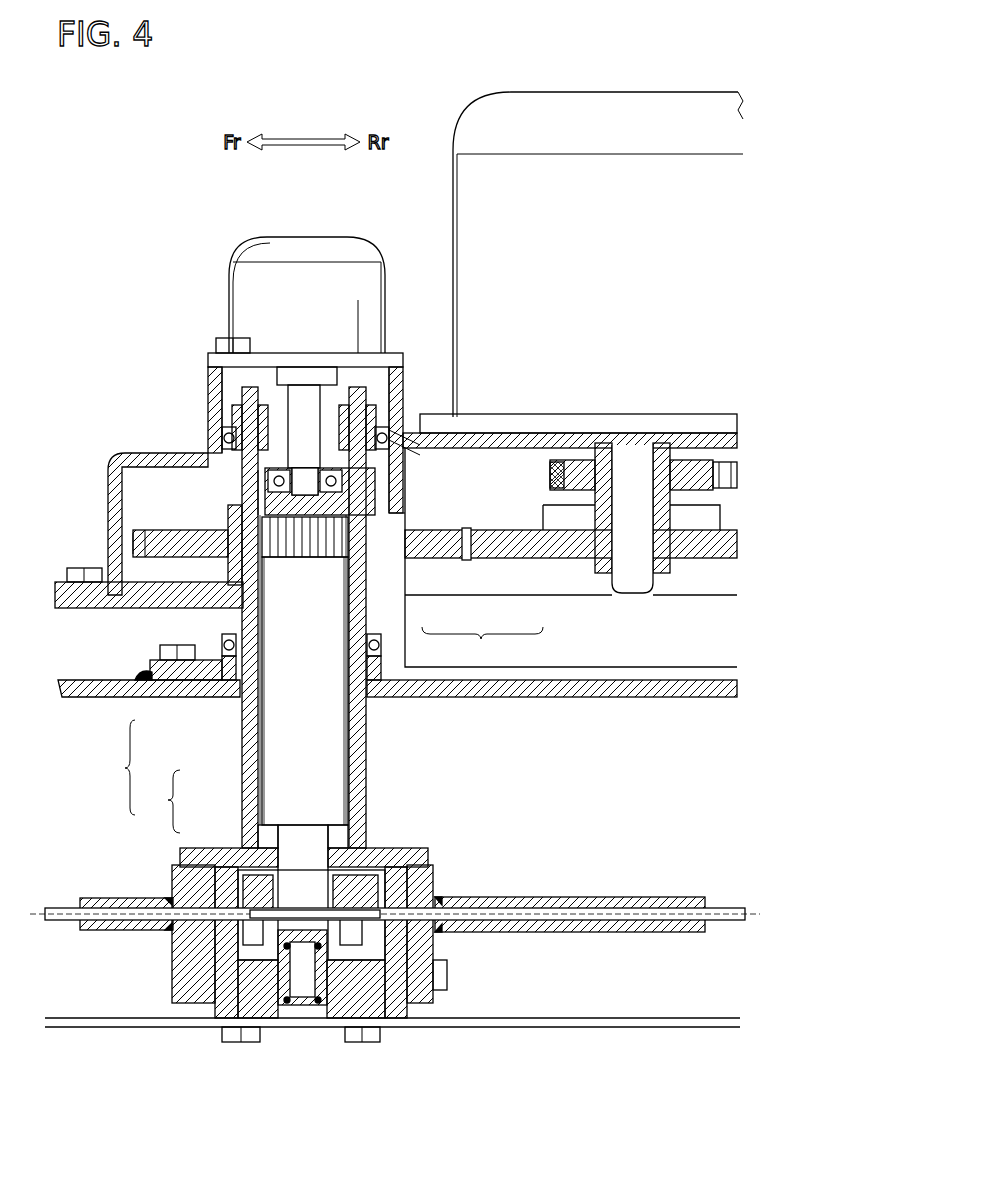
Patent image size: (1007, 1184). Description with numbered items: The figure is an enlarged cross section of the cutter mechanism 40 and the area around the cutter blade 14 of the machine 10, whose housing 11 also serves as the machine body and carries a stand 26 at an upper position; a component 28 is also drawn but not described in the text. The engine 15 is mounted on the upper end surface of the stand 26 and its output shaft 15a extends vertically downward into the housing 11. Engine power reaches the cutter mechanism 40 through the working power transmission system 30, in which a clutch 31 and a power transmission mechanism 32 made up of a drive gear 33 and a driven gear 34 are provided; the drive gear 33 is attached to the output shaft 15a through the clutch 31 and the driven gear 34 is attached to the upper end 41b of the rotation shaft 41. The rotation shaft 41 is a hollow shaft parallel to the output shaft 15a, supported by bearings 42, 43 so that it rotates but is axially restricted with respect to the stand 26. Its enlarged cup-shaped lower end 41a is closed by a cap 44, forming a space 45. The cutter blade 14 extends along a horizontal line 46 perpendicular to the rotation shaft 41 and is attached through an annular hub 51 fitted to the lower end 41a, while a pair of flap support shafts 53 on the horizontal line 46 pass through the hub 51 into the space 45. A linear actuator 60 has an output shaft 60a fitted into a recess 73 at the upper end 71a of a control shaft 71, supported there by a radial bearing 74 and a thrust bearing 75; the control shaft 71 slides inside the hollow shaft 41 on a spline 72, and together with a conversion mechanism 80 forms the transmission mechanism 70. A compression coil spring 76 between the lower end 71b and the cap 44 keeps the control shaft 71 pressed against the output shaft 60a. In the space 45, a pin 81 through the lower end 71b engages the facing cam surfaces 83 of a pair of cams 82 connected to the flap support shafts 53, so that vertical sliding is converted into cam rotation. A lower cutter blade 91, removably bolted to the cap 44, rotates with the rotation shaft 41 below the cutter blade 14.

The drive unit 10 is at (135, 245).
The housing 11 is at (80, 680).
The cutter blade 14 is at (92, 932).
The engine 15 is at (612, 108).
The output shaft 15a is at (632, 585).
The stand 26 is at (118, 460).
The upper plate 28 is at (690, 432).
The working power transmission system 30 is at (688, 568).
The clutch 31 is at (560, 520).
The power transmission mechanism 32 is at (482, 646).
The drive gear 33 is at (520, 560).
The driven gear 34 is at (428, 560).
The cutter mechanism 40 is at (114, 767).
The rotation shaft 41 is at (242, 715).
The lower end 41a is at (395, 1020).
The upper end 41b is at (242, 400).
The bearing 42 is at (222, 437).
The bearing 43 is at (222, 648).
The cap 44 is at (343, 1010).
The space 45 is at (380, 1010).
The horizontal line 46 is at (515, 903).
The hub 51 is at (440, 948).
The flap support shaft 53 is at (75, 905).
The actuator 60 is at (300, 258).
The output shaft 60a is at (298, 400).
The transmission mechanism 70 is at (159, 801).
The control shaft 71 is at (290, 752).
The upper end 71a is at (248, 470).
The lower end 71b is at (330, 830).
The spline 72 is at (298, 548).
The recess 73 is at (372, 470).
The radial bearing 74 is at (392, 400).
The thrust bearing 75 is at (240, 500).
The compression coil spring 76 is at (290, 1005).
The conversion mechanism 80 is at (222, 850).
The pin 81 is at (311, 942).
The cam 82 is at (412, 862).
The cam surface 83 is at (378, 862).
The lower cutter blade 91 is at (555, 1027).